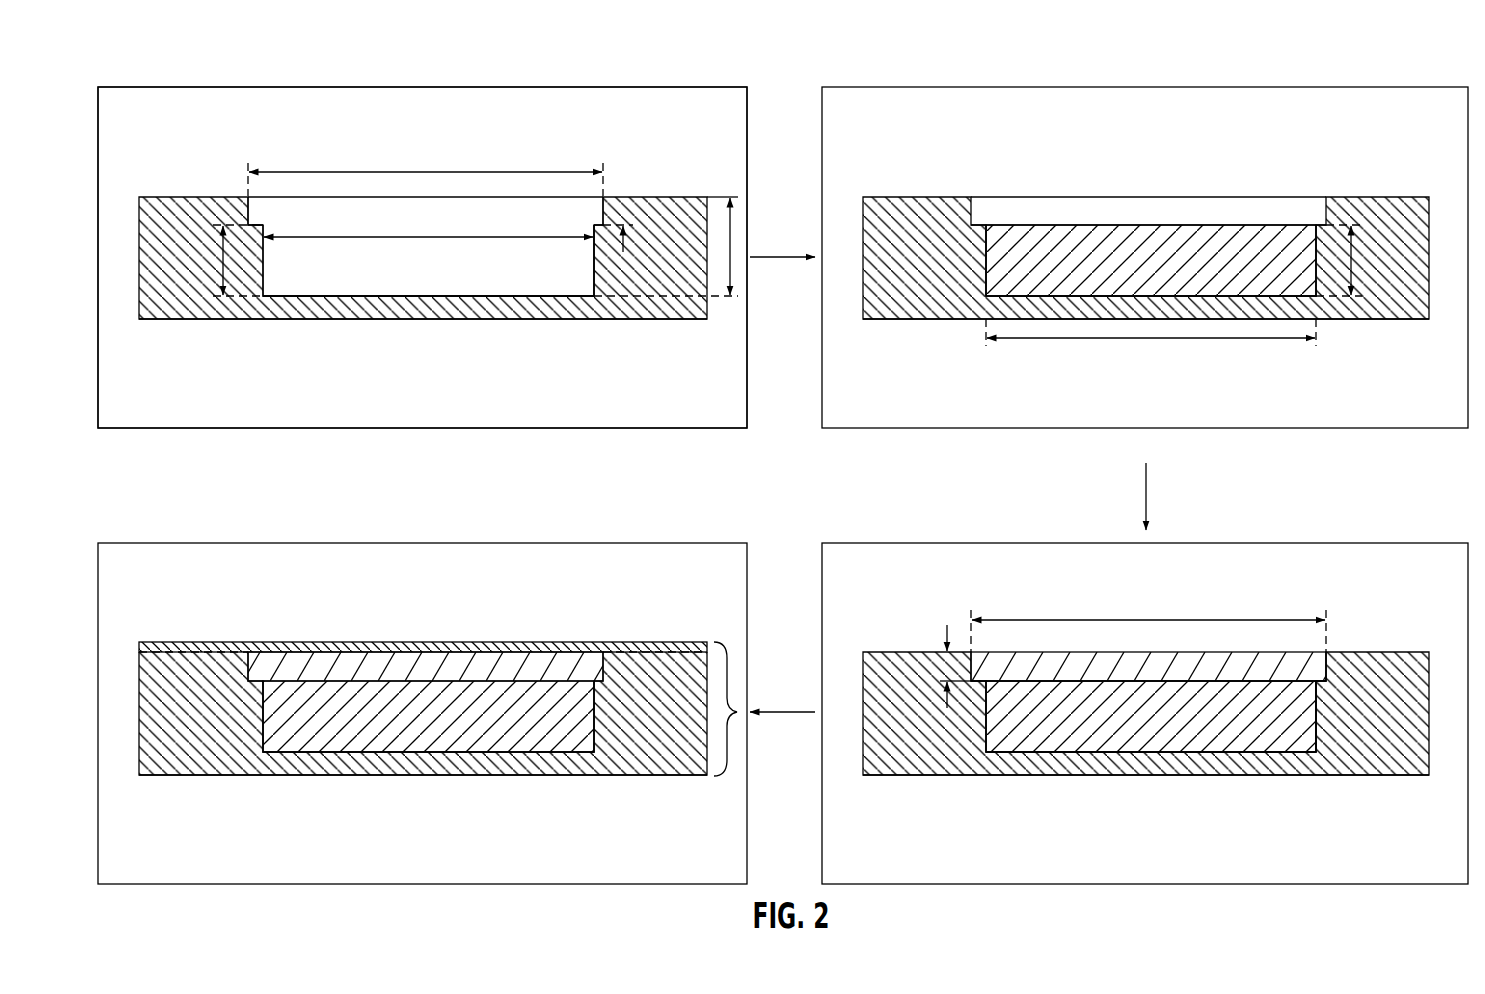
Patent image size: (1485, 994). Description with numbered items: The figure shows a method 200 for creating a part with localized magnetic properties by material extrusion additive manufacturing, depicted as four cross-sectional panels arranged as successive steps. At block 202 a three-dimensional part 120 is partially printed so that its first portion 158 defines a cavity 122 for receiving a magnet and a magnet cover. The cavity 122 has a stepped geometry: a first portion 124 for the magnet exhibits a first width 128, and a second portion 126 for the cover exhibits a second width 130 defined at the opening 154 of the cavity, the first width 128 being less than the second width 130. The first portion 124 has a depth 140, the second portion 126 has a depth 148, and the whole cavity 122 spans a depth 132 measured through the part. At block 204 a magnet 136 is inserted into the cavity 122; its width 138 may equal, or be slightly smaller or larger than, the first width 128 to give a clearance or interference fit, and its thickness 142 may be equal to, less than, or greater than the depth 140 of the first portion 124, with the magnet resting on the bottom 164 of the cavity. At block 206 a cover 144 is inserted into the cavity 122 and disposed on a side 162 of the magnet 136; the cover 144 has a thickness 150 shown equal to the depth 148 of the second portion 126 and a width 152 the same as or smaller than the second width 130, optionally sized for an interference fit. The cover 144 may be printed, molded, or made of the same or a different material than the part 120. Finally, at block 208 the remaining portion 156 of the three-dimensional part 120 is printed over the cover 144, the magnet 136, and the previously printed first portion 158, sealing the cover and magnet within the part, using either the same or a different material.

The three-dimensional part 120 is at (190, 312).
The cavity 122 is at (300, 298).
The first portion of the cavity 124 is at (594, 275).
The second portion of the cavity 126 is at (248, 208).
The first width 128 is at (283, 236).
The second width 130 is at (470, 172).
The depth of the cavity 132 is at (731, 232).
The magnet 136 is at (1317, 236).
The width of the magnet 138 is at (1142, 344).
The depth of the first portion 140 is at (222, 248).
The thickness of the magnet 142 is at (1352, 272).
The cover 144 is at (515, 663).
The depth of the second portion 148 is at (623, 194).
The thickness of the cover 150 is at (946, 637).
The width of the cover 152 is at (1212, 619).
The opening of the cavity 154 is at (396, 194).
The remaining portion of the three-dimensional part 156 is at (718, 644).
The first portion of the three-dimensional part 158 is at (660, 314).
The side of the magnet 162 is at (1108, 224).
The cavity bottom surface 164 is at (425, 300).
The method 200 is at (181, 82).
The block 202 is at (600, 87).
The block 204 is at (1085, 87).
The block 206 is at (1306, 542).
The block 208 is at (572, 542).